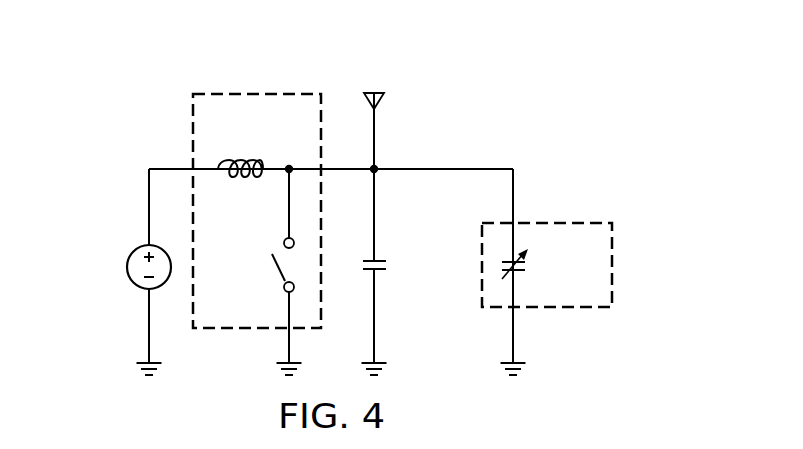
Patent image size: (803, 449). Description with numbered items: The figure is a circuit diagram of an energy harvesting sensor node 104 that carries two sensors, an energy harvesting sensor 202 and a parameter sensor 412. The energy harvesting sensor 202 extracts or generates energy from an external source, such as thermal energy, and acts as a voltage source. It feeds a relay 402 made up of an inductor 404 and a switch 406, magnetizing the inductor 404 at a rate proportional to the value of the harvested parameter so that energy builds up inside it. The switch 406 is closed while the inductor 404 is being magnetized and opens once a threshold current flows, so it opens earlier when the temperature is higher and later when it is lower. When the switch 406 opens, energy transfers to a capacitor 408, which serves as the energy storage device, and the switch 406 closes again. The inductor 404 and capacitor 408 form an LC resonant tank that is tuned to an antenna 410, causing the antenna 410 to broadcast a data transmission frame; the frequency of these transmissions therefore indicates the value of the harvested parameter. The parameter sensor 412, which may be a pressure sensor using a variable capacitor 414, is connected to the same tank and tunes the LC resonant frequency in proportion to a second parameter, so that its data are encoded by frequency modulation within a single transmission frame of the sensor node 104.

The energy harvesting sensor node 104 is at (509, 59).
The energy harvesting sensor 202 is at (128, 264).
The relay 402 is at (241, 86).
The inductor 404 is at (235, 158).
The switch 406 is at (283, 270).
The capacitor 408 is at (388, 266).
The antenna 410 is at (379, 91).
The parameter sensor 412 is at (558, 310).
The variable capacitor 414 is at (530, 268).